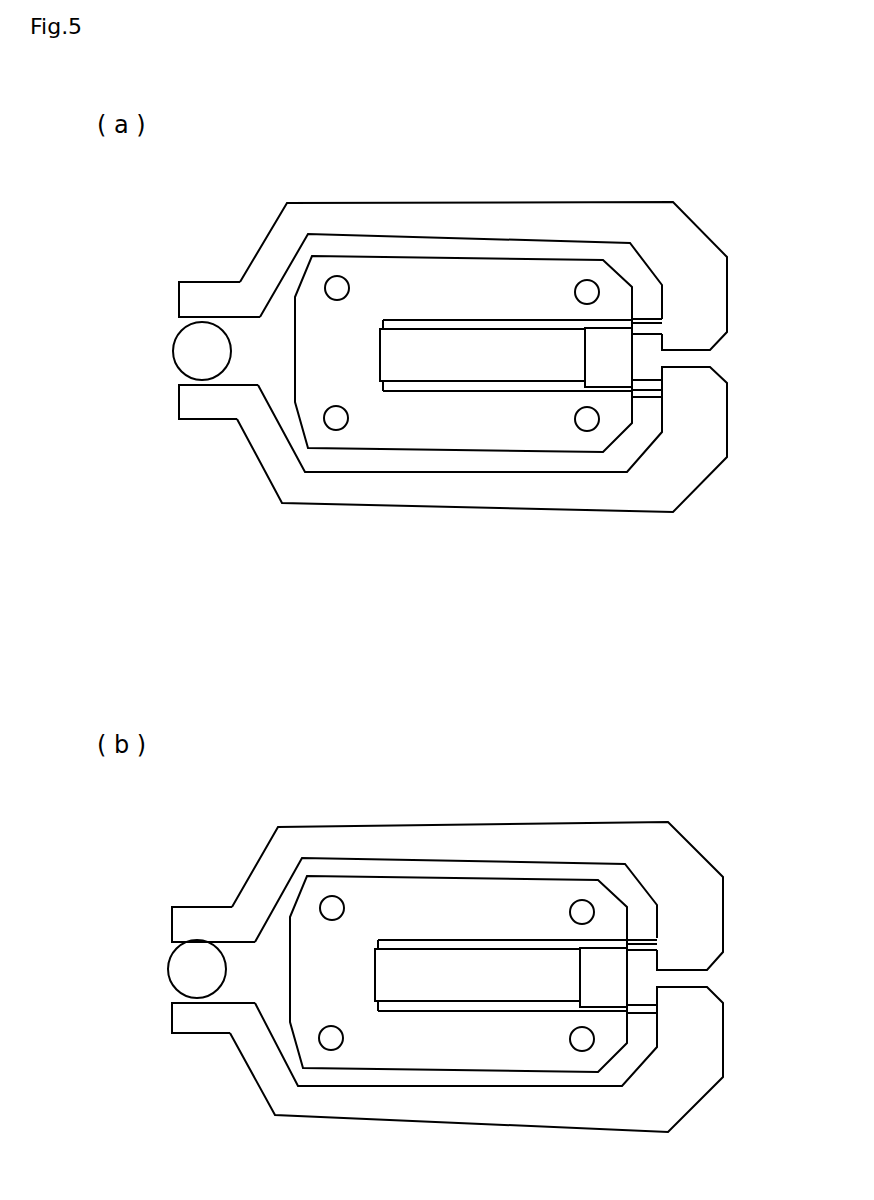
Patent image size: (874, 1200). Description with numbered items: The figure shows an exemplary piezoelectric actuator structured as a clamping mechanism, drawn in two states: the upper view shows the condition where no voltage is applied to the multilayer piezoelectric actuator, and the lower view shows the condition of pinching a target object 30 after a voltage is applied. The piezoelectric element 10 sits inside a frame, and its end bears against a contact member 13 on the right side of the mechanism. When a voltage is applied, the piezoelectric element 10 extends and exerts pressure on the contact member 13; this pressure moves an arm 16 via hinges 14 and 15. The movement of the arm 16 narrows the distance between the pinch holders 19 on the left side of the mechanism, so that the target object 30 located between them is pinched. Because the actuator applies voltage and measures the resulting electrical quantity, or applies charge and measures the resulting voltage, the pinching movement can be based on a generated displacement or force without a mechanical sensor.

The piezoelectric element 10 is at (450, 343).
The contact member 13 is at (600, 363).
The hinge 14 is at (647, 315).
The hinge 15 is at (665, 341).
The arm 16 is at (717, 299).
The pinch holder 19 is at (202, 297).
The target object 30 is at (187, 345).